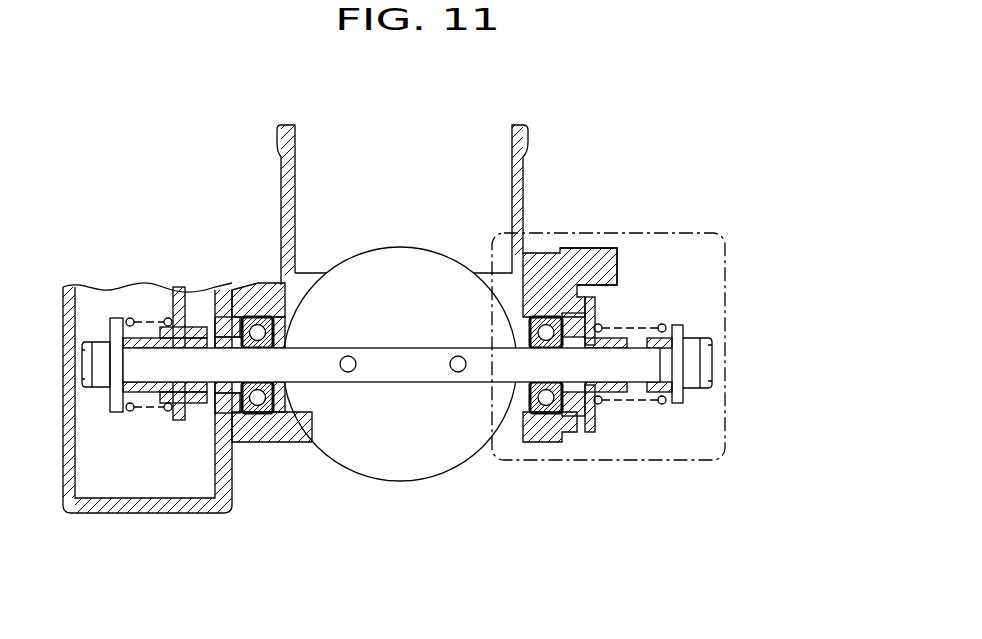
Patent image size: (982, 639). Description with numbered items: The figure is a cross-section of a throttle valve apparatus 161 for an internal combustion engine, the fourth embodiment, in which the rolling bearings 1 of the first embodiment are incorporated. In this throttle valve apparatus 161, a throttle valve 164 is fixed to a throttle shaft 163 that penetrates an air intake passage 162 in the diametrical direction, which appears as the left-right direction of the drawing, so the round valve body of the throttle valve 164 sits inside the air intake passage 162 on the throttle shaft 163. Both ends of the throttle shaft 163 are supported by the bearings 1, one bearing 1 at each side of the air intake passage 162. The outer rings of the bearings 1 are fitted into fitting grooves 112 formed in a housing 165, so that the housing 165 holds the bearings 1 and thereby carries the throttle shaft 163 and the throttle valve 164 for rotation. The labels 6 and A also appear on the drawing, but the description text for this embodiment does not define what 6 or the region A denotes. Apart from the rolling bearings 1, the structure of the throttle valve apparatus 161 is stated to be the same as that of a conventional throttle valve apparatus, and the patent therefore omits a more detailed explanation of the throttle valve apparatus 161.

The throttle valve apparatus 161 is at (253, 157).
The air intake passage 162 is at (452, 163).
The throttle shaft 163 is at (394, 365).
The throttle valve 164 is at (420, 448).
The housing 165 is at (593, 250).
The fitting grooves 112 is at (258, 317).
The bearings 1 is at (278, 428).
The spacer / seal 6 is at (246, 413).
The region A is at (647, 460).